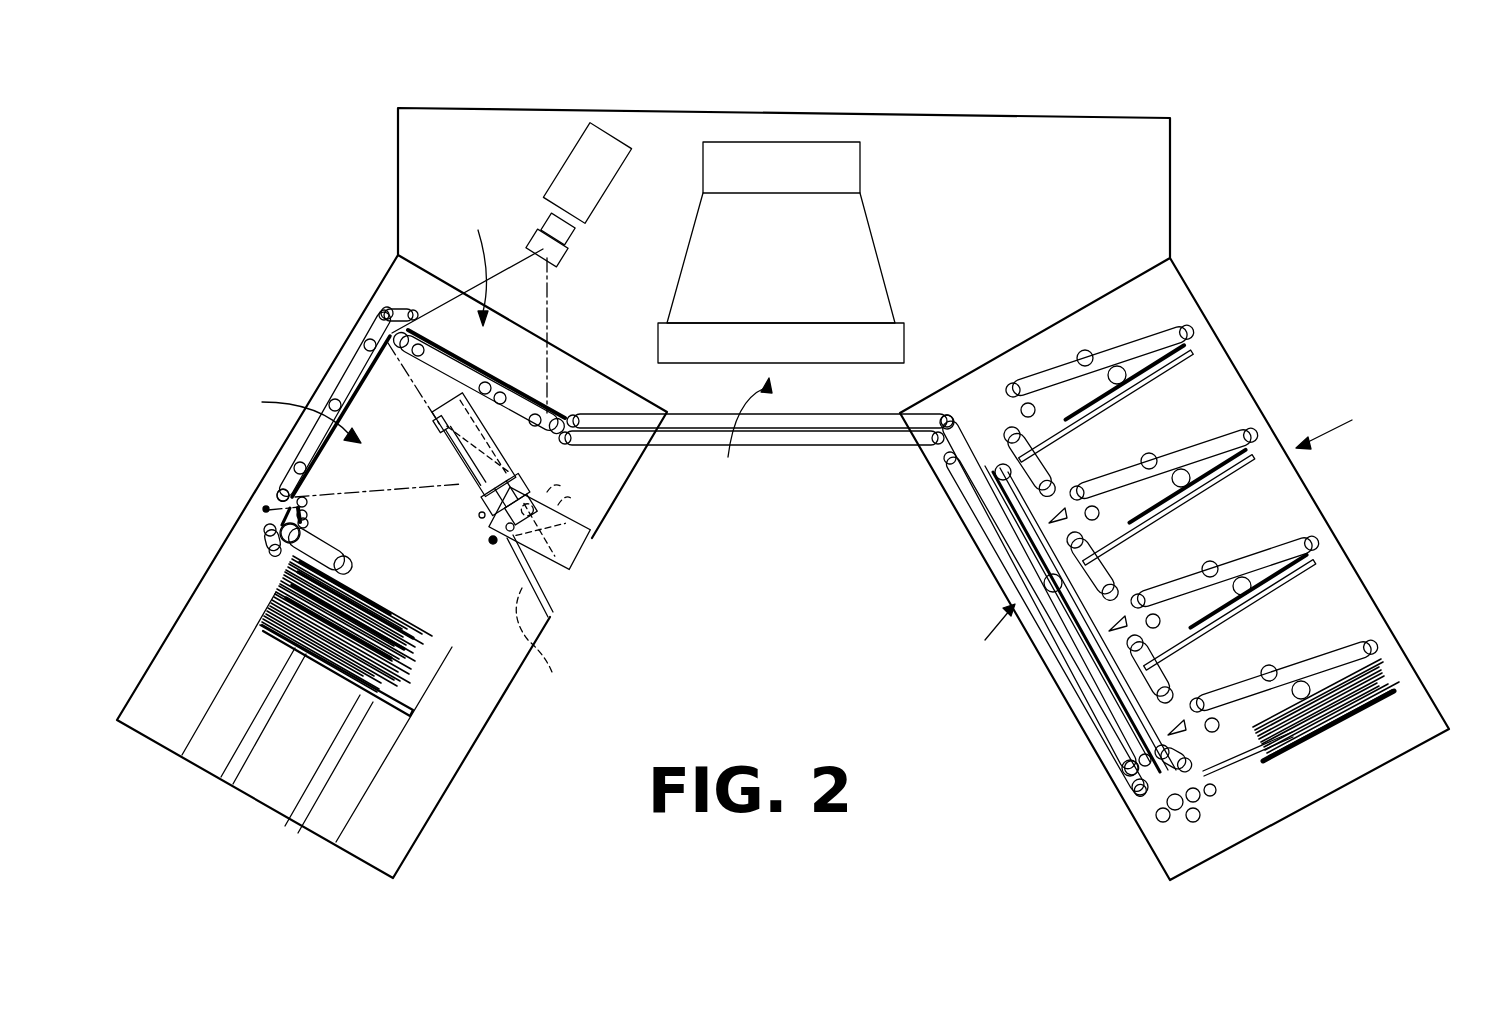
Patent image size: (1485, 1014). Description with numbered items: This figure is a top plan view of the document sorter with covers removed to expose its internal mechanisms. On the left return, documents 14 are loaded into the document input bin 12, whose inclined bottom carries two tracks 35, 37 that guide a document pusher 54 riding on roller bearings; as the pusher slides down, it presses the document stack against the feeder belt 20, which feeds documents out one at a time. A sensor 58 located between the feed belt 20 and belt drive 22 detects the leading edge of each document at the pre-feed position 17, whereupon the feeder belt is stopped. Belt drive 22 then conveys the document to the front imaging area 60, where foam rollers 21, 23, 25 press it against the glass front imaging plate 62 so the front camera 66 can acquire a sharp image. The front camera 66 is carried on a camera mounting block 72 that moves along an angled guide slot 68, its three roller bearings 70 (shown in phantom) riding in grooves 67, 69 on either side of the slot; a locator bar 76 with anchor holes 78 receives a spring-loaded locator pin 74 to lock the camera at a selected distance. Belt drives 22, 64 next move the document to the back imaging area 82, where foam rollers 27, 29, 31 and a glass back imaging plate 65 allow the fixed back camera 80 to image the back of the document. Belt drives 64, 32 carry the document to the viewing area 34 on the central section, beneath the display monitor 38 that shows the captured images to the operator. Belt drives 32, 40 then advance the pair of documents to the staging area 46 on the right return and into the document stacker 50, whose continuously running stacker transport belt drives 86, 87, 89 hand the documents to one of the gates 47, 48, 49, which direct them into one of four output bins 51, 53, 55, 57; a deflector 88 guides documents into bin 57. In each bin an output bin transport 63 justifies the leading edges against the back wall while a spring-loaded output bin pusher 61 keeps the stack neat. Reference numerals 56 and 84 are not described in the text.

The document input bin 12 is at (375, 745).
The documents 14 is at (212, 556).
The pre-feed position 17 is at (264, 545).
The feeder belt 20 is at (350, 556).
The foam roller 21 is at (295, 462).
The belt drive 22 is at (343, 363).
The foam roller 23 is at (330, 400).
The foam roller 25 is at (370, 338).
The foam roller 27 is at (395, 263).
The foam roller 29 is at (487, 388).
The foam roller 31 is at (560, 405).
The belt drive 32 is at (815, 447).
The viewing area 34 is at (753, 431).
The track 35 is at (228, 778).
The track 37 is at (303, 826).
The display monitor 38 is at (788, 142).
The belt drive 40 is at (1060, 672).
The staging area 46 is at (980, 633).
The gate 47 is at (1159, 725).
The gate 48 is at (1104, 632).
The gate 49 is at (1043, 520).
The document stacker 50 is at (1337, 425).
The output bin 51 is at (1382, 655).
The output bin 53 is at (1310, 542).
The document pusher 54 is at (432, 708).
The output bin 55 is at (1255, 432).
The pick roller 56 is at (272, 560).
The output bin 57 is at (1200, 332).
The sensor 58 is at (264, 506).
The front imaging area 60 is at (296, 413).
The output bin pusher 61 is at (1300, 744).
The front imaging plate 62 is at (320, 473).
The output bin transport 63 is at (1298, 660).
The belt drive 64 is at (507, 413).
The back imaging plate 65 is at (543, 402).
The front camera 66 is at (580, 540).
The groove 67 is at (546, 643).
The guide slot 68 is at (560, 595).
The groove 69 is at (425, 398).
The roller bearings 70 is at (568, 484).
The camera mounting block 72 is at (490, 537).
The locator pin 74 is at (500, 548).
The locator bar 76 is at (428, 432).
The anchor holes 78 is at (427, 447).
The back camera 80 is at (603, 135).
The back imaging area 82 is at (463, 258).
The document stack 84 is at (1395, 684).
The belt drive 86 is at (1200, 812).
The belt drive 87 is at (1044, 580).
The deflector 88 is at (997, 430).
The belt drive 89 is at (1040, 455).